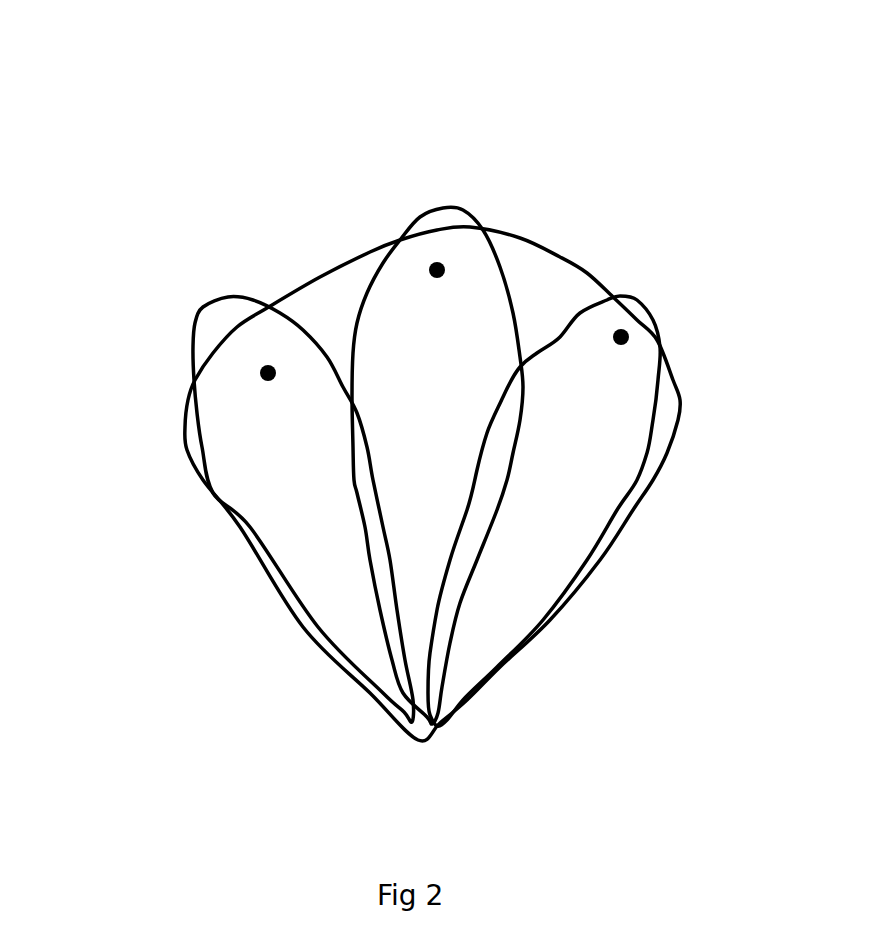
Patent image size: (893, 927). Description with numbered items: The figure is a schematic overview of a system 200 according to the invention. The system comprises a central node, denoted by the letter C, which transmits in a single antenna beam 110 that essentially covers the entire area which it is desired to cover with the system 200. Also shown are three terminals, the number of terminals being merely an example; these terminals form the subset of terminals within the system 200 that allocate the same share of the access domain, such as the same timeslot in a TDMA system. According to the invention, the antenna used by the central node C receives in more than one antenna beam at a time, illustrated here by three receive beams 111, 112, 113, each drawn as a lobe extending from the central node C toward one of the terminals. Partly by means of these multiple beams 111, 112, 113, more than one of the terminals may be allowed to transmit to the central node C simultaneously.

The system 200 is at (100, 160).
The antenna beam 110 is at (186, 469).
The receive beam 111 is at (186, 347).
The receive beam 112 is at (400, 212).
The receive beam 113 is at (670, 307).